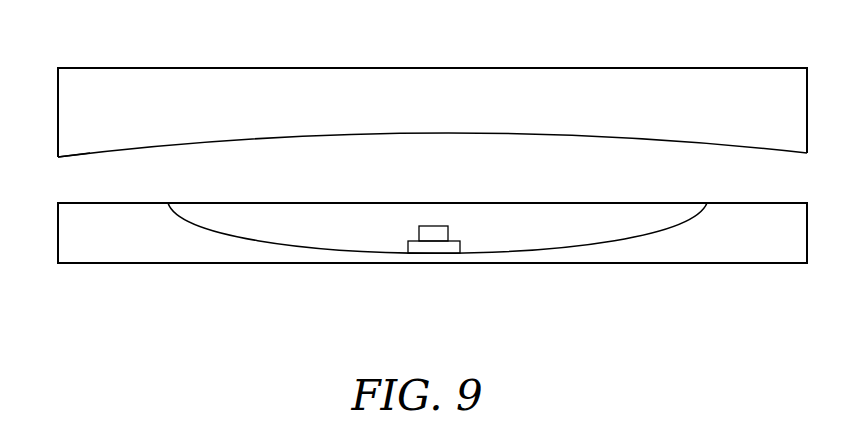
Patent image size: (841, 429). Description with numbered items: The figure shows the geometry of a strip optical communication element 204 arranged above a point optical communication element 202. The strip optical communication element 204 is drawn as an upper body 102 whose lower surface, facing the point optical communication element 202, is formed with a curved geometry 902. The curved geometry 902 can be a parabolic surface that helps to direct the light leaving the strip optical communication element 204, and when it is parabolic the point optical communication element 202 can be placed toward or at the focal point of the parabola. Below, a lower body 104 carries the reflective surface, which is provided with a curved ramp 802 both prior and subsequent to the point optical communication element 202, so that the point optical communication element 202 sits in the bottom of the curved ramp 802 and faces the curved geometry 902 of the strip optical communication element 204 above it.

The first substrate 102 is at (696, 68).
The strip optical communication element 204 is at (383, 76).
The curved geometry 902 is at (77, 158).
The second substrate 104 is at (748, 258).
The curved ramp 802 is at (582, 248).
The point optical communication element 202 is at (433, 233).